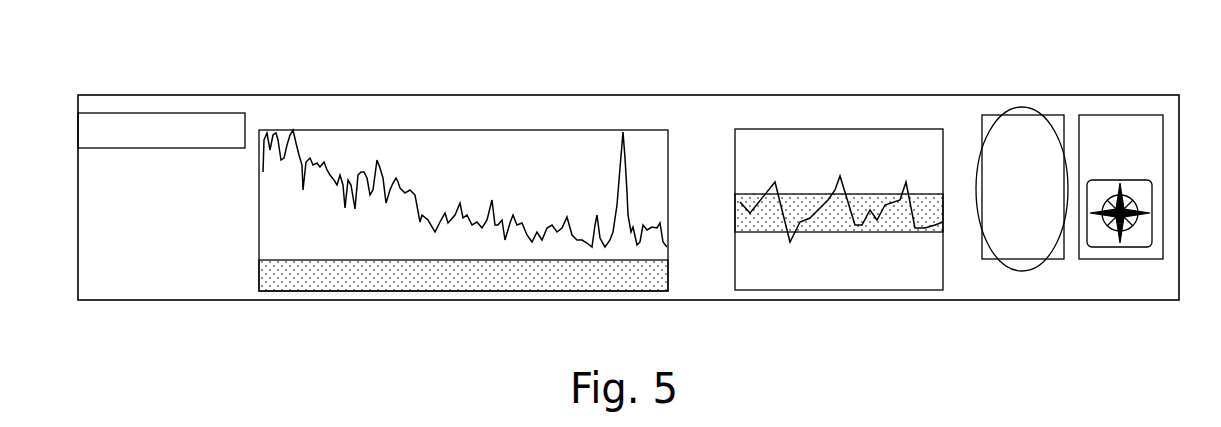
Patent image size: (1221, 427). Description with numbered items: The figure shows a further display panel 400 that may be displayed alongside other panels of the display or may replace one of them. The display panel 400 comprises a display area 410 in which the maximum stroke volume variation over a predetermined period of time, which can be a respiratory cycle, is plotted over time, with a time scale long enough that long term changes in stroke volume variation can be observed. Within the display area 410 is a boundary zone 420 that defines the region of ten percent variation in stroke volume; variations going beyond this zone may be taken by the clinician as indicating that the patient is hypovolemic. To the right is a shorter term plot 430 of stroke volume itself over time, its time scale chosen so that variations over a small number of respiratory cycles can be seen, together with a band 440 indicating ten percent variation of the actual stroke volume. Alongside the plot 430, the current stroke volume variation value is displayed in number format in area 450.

The further display panel 400 is at (452, 83).
The display area 410 is at (545, 180).
The boundary zone 420 is at (360, 275).
The shorter term plot 430 is at (863, 169).
The band 440 is at (827, 227).
The area 450 is at (1012, 113).